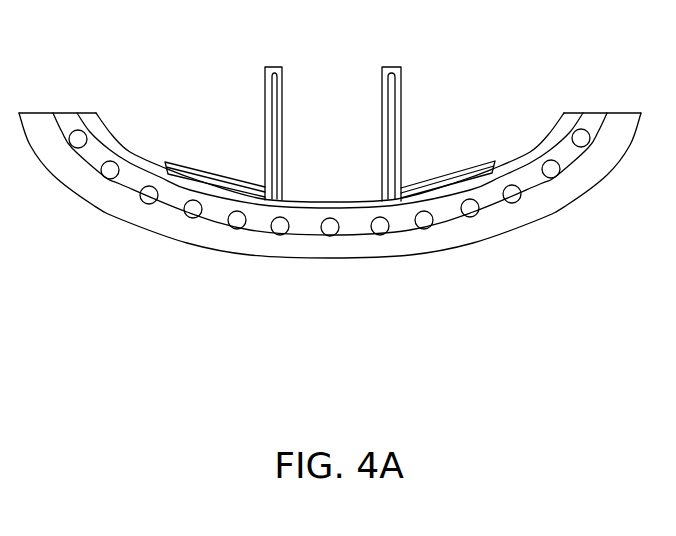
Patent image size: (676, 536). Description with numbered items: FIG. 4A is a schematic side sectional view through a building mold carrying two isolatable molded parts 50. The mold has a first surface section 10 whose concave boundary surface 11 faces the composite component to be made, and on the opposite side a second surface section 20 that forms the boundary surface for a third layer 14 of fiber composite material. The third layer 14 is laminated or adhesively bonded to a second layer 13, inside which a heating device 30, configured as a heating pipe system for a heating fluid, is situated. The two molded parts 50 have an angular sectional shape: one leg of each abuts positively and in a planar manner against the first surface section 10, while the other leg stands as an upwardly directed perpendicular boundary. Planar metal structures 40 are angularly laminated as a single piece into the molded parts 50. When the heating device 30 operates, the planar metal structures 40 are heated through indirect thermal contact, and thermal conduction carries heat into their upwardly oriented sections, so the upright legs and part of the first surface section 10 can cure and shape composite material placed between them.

The first surface section 10 is at (118, 152).
The boundary surface 11 is at (557, 130).
The second layer 13 is at (298, 226).
The third layer 14 is at (322, 249).
The second surface section 20 is at (393, 255).
The heating device 30 is at (82, 137).
The planar metal structures 40 is at (278, 115).
The molded parts 50 is at (268, 67).